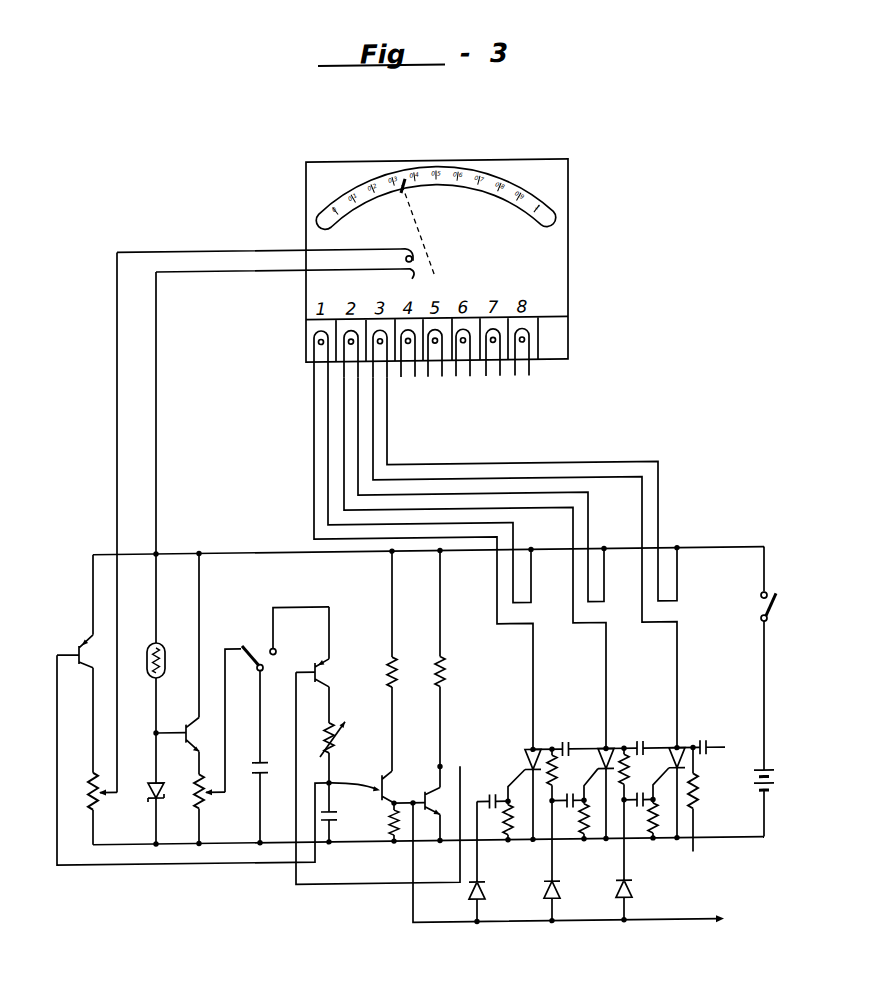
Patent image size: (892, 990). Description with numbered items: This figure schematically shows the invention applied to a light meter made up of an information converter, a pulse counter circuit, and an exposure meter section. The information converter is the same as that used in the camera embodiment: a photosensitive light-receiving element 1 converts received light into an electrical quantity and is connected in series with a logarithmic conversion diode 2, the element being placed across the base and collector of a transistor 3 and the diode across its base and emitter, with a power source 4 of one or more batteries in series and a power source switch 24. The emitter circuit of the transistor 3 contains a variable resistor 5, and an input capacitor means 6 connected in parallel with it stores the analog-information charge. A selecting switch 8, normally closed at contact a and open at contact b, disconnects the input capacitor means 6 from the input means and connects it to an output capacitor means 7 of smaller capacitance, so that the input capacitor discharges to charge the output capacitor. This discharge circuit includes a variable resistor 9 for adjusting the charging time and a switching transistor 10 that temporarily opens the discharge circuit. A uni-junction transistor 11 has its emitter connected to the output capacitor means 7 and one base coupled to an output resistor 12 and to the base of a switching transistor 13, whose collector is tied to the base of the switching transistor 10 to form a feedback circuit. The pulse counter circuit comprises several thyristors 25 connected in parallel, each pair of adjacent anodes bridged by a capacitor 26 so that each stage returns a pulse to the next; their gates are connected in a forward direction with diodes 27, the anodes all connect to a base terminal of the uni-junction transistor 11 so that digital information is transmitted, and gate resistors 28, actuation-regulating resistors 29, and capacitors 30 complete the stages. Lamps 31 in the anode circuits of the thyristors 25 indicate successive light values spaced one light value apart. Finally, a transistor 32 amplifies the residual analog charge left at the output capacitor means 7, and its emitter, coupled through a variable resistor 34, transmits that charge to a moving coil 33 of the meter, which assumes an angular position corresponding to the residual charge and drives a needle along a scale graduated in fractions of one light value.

The photosensitive light-receiving element 1 is at (165, 663).
The logarithmic conversion diode 2 is at (150, 792).
The transistor 3 is at (199, 734).
The power source 4 is at (757, 793).
The variable resistor 5 is at (196, 803).
The input capacitor means 6 is at (255, 772).
The output capacitor means 7 is at (339, 817).
The selecting switch 8 is at (248, 642).
The variable resistor 9 is at (324, 735).
The switching transistor 10 is at (333, 671).
The uni-junction transistor 11 is at (381, 779).
The output resistor 12 is at (389, 826).
The switching transistor 13 is at (437, 790).
The power source switch 24 is at (760, 613).
The thyristors 25 is at (527, 761).
The capacitor 26 is at (564, 744).
The diodes 27 is at (486, 892).
The gate resistors 28 is at (590, 828).
The actuation-regulating resistors 29 is at (631, 771).
The capacitors 30 is at (489, 795).
The lamps 31 is at (330, 365).
The transistor 32 is at (88, 640).
The moving coil 33 is at (401, 271).
The variable resistor 34 is at (90, 800).